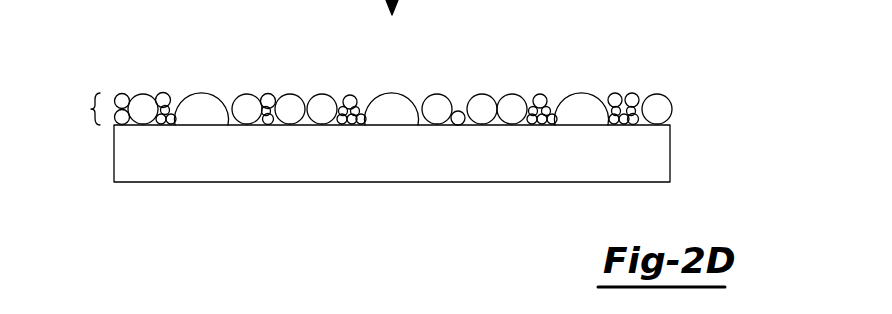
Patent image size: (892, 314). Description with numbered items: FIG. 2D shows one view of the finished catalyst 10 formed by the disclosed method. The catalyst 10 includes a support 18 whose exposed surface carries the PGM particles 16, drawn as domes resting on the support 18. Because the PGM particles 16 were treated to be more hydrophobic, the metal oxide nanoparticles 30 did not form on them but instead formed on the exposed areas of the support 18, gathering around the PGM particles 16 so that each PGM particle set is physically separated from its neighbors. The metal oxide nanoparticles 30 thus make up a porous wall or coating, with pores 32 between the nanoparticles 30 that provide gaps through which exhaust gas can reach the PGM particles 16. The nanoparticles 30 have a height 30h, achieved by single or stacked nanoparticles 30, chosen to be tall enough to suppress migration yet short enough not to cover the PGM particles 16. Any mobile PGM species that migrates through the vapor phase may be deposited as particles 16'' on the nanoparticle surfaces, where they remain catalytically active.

The catalyst 10 is at (686, 70).
The PGM particles 16 is at (392, 83).
The PGM particles deposited on metal oxide nanoparticles 16'' is at (348, 73).
The support 18 is at (553, 168).
The metal oxide nanoparticles 30 is at (141, 105).
The height of the metal oxide nanoparticles 30h is at (78, 109).
The pores 32 is at (349, 102).